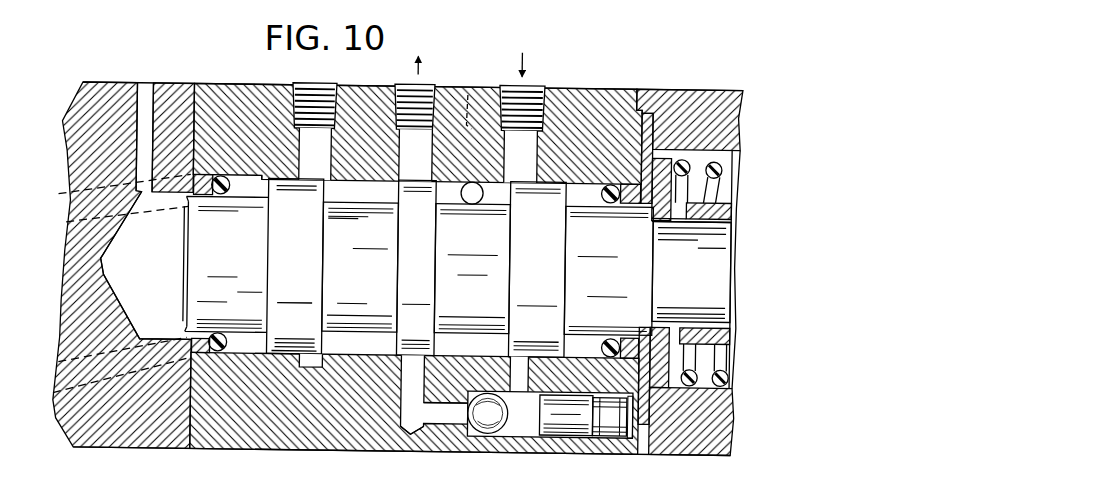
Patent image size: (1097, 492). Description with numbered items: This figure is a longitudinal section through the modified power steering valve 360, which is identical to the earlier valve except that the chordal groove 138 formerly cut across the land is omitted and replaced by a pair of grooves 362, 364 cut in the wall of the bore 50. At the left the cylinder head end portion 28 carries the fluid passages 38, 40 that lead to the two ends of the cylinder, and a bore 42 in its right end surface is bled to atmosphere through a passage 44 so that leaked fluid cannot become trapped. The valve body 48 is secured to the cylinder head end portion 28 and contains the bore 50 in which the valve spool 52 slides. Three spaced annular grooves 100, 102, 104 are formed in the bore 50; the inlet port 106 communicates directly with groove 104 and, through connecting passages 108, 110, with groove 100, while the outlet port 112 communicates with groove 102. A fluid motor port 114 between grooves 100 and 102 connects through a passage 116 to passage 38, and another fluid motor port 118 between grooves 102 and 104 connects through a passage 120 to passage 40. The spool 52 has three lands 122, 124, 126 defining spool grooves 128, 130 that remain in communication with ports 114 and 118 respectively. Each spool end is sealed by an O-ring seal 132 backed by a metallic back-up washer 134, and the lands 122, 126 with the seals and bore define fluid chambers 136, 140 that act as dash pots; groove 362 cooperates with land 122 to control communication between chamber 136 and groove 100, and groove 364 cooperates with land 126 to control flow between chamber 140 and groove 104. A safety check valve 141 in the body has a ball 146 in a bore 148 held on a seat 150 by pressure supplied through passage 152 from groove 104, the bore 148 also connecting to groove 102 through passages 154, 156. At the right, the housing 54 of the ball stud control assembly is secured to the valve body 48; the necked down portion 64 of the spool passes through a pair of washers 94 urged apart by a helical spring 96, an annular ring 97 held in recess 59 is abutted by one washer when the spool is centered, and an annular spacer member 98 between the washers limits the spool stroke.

The cylinder head end portion 28 is at (78, 103).
The fluid passage 38 is at (75, 372).
The fluid passage 40 is at (80, 186).
The bore 42 is at (108, 274).
The passage 44 is at (152, 80).
The valve body 48 is at (200, 80).
The bore 50 is at (262, 193).
The valve spool 52 is at (360, 267).
The housing 54 is at (705, 452).
The recess 59 is at (644, 425).
The necked down portion 64 is at (691, 271).
The washers 94 is at (663, 236).
The helical spring 96 is at (721, 171).
The annular ring 97 is at (650, 213).
The annular spacer member 98 is at (733, 213).
The annular groove 100 is at (308, 350).
The annular groove 102 is at (416, 350).
The annular groove 104 is at (524, 350).
The inlet port 106 is at (536, 96).
The connecting passage 108 is at (468, 88).
The connecting passage 110 is at (292, 131).
The outlet port 112 is at (405, 82).
The fluid motor port 114 is at (353, 362).
The fluid passage 116 is at (256, 359).
The fluid motor port 118 is at (473, 200).
The fluid passage 120 is at (396, 210).
The land 122 is at (296, 267).
The land 124 is at (416, 267).
The land 126 is at (537, 270).
The annular groove 128 is at (378, 338).
The annular groove 130 is at (473, 340).
The O-ring seal 132 is at (223, 193).
The back-up washer 134 is at (205, 335).
The fluid chamber 136 is at (233, 351).
The chordal groove 138 is at (580, 428).
The fluid chamber 140 is at (594, 191).
The check valve assembly 141 is at (528, 463).
The ball 146 is at (500, 433).
The bore 148 is at (537, 440).
The seat 150 is at (480, 430).
The passage 152 is at (512, 384).
The connecting passage 154 is at (444, 423).
The connecting passage 156 is at (405, 421).
The valve 360 is at (256, 72).
The groove 362 is at (262, 172).
The groove 364 is at (548, 176).